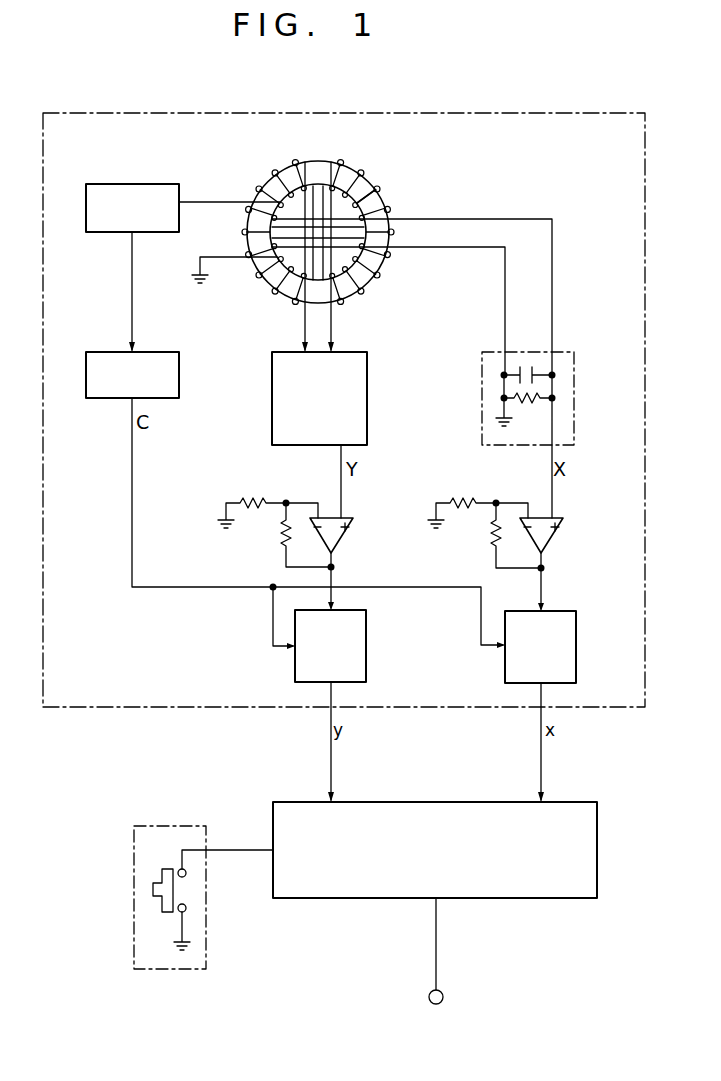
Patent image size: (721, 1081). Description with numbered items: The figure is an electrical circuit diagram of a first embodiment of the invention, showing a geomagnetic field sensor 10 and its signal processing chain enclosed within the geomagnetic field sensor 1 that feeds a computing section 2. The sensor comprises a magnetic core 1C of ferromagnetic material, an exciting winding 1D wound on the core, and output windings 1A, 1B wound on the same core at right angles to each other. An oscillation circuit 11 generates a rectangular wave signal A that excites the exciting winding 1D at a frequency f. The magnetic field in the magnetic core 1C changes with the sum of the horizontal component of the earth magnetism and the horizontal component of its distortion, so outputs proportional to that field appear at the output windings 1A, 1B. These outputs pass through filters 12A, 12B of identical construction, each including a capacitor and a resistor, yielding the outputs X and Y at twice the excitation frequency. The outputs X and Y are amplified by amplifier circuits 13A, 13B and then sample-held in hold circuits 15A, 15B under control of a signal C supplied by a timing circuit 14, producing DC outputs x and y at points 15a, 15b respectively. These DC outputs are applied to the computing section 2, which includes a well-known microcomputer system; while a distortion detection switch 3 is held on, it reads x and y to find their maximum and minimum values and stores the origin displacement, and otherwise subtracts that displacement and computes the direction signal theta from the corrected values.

The geomagnetic field sensor 1 is at (598, 113).
The computing section 2 is at (562, 802).
The distortion detection switch 3 is at (178, 826).
The geomagnetic field sensor 10 is at (352, 172).
The output winding 1A is at (444, 219).
The output winding 1B is at (334, 330).
The magnetic core 1C is at (373, 208).
The exciting winding 1D is at (230, 202).
The oscillation circuit 11 is at (150, 184).
The filter 12A is at (574, 388).
The filter 12B is at (367, 404).
The amplifier circuit 13A is at (556, 538).
The amplifier circuit 13B is at (346, 538).
The timing circuit 14 is at (147, 352).
The hold circuit 15A is at (576, 649).
The hold circuit 15B is at (366, 648).
The point 15a is at (545, 699).
The point 15b is at (336, 699).